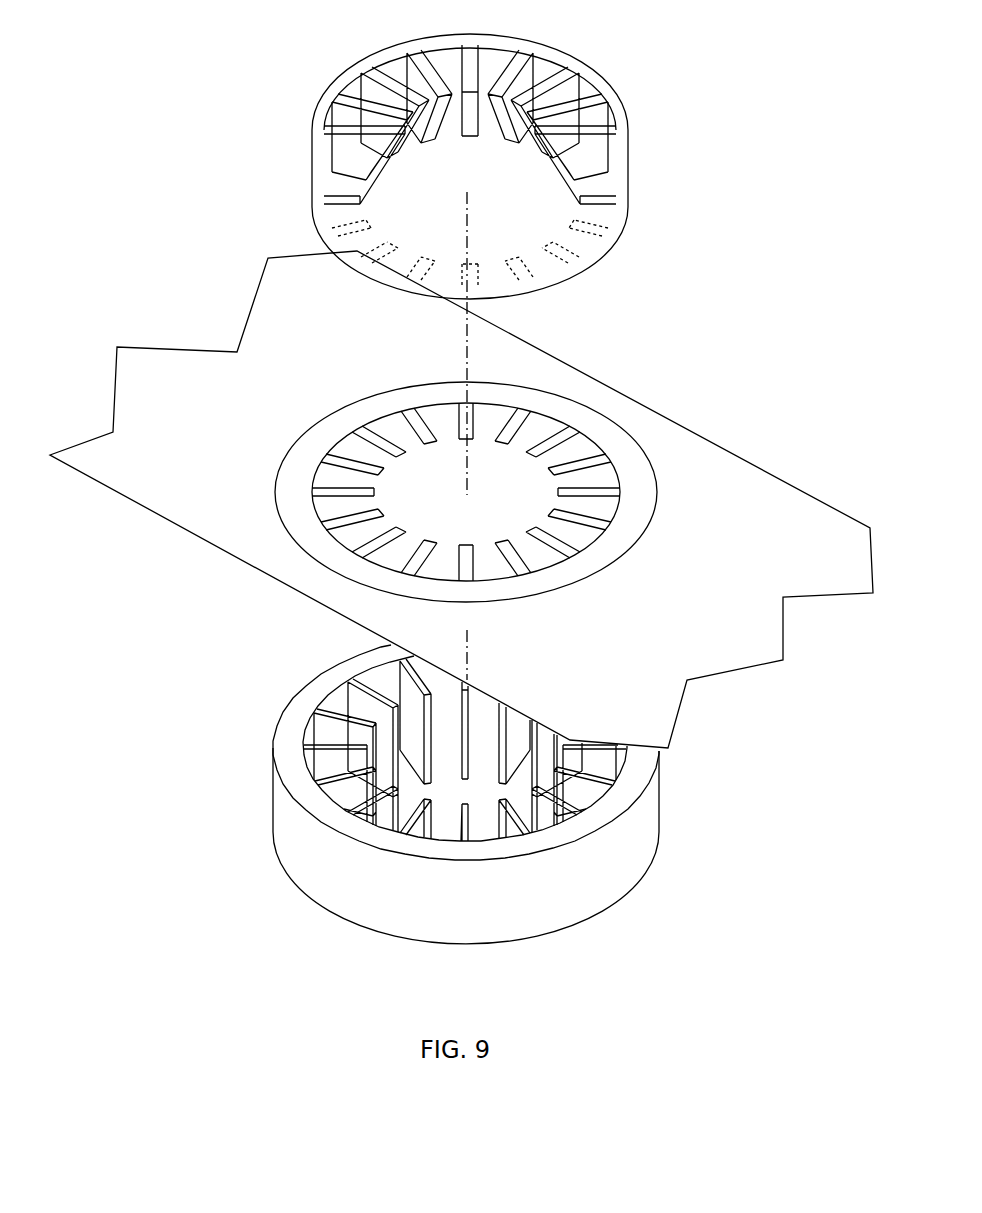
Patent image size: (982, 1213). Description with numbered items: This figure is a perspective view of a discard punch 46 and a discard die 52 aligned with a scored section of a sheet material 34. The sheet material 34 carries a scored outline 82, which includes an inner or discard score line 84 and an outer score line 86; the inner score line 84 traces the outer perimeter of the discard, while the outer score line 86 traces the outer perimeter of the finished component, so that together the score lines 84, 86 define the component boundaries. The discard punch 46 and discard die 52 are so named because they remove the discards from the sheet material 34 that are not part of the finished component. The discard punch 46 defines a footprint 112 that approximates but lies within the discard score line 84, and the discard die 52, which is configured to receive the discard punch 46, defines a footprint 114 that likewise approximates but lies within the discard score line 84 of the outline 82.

The sheet material 34 is at (95, 436).
The discard punch 46 is at (597, 68).
The discard die 52 is at (662, 809).
The outline 82 is at (664, 464).
The inner or discard score line 84 is at (558, 418).
The outer score line 86 is at (638, 437).
The footprint 112 is at (566, 244).
The footprint 114 is at (333, 738).